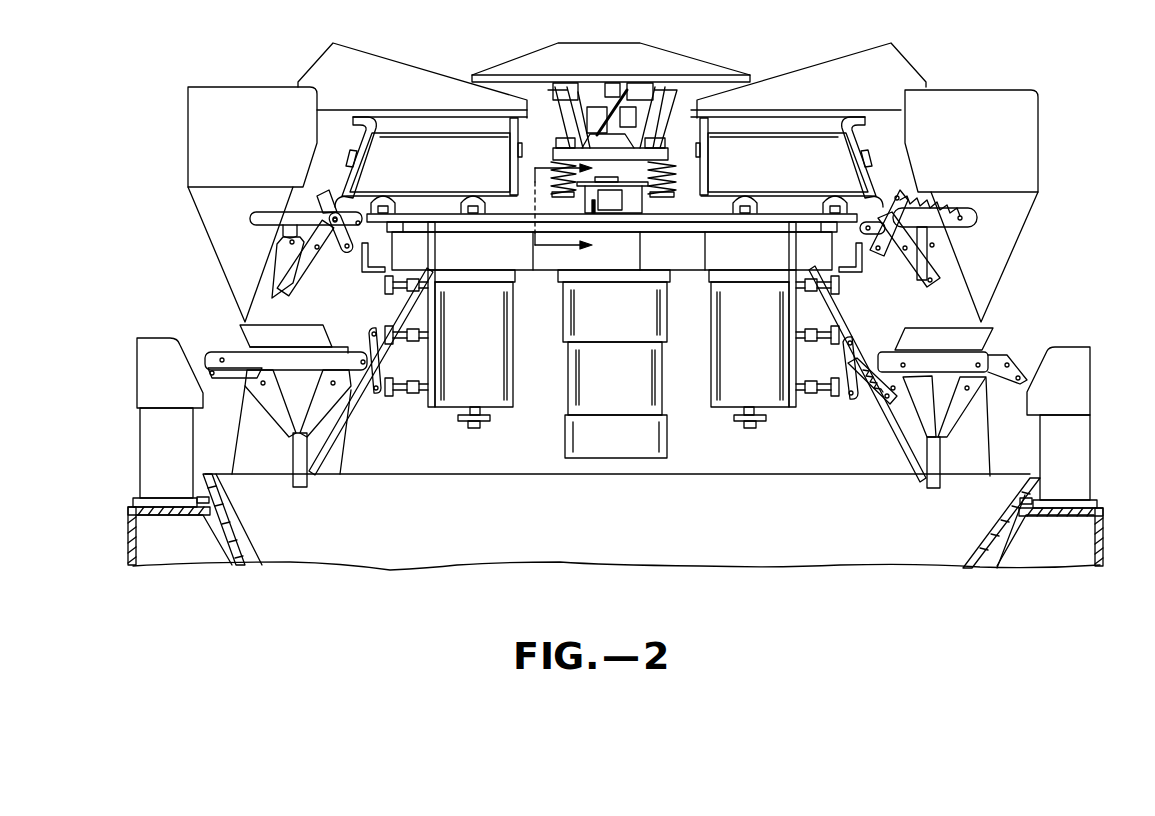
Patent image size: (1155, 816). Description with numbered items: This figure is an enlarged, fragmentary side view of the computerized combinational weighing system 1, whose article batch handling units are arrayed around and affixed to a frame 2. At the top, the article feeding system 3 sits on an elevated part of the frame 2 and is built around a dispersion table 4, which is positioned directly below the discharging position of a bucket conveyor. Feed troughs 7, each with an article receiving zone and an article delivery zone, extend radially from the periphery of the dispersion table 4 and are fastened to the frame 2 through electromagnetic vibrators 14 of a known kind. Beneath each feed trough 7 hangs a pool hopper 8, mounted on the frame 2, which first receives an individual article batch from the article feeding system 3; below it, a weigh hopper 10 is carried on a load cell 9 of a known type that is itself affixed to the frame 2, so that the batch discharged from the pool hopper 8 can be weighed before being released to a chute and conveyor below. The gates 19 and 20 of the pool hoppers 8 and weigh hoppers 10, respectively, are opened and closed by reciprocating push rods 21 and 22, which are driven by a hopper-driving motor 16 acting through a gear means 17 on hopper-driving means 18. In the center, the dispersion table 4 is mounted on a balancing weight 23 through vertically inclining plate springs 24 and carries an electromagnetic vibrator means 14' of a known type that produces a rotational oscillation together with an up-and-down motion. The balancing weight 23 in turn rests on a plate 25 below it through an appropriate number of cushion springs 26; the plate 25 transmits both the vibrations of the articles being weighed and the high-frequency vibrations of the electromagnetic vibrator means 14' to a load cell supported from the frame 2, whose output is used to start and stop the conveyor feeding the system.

The computerized combinational weighing system 1 is at (1101, 195).
The frame 2 is at (693, 228).
The article feeding system 3 is at (797, 14).
The dispersion table 4 is at (658, 62).
The feed troughs 7 is at (398, 68).
The pool hopper 8 is at (202, 207).
The load cell 9 is at (148, 377).
The weigh hopper 10 is at (258, 355).
The electromagnetic vibrators 14 is at (703, 117).
The electromagnetic vibrator means 14' is at (681, 78).
The hopper-driving motor 16 is at (587, 392).
The gear means 17 is at (543, 257).
The hopper-driving means 18 is at (443, 380).
The gate 19 is at (265, 267).
The gate 20 is at (257, 400).
The push rod 21 is at (362, 250).
The push rod 22 is at (853, 327).
The balancing weight 23 is at (583, 90).
The plate springs 24 is at (590, 85).
The plate 25 is at (673, 195).
The cushion springs 26 is at (687, 177).